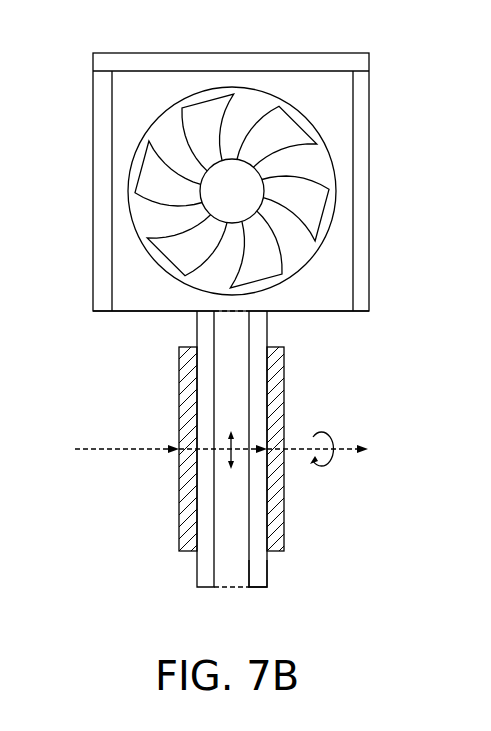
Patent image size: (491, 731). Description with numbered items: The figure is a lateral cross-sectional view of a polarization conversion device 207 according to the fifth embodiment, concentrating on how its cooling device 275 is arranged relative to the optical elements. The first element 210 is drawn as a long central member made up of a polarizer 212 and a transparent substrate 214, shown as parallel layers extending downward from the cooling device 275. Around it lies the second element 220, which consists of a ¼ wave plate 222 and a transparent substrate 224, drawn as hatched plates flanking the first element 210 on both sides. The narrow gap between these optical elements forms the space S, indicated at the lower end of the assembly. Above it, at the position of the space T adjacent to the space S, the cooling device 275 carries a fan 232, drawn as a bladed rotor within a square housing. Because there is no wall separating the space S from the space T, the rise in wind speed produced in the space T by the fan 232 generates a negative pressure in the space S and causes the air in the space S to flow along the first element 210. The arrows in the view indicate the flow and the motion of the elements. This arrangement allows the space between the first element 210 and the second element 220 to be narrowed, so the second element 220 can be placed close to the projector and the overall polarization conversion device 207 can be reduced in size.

The polarization conversion device 207 is at (453, 32).
The cooling device 275 is at (128, 86).
The fan 232 is at (173, 253).
The space T is at (239, 311).
The first element 210 is at (103, 335).
The transparent substrate 214 is at (197, 332).
The polarizer 212 is at (179, 361).
The second element 220 is at (362, 515).
The ¼ wave plate 222 is at (284, 538).
The transparent substrate 224 is at (267, 561).
The space S is at (232, 588).